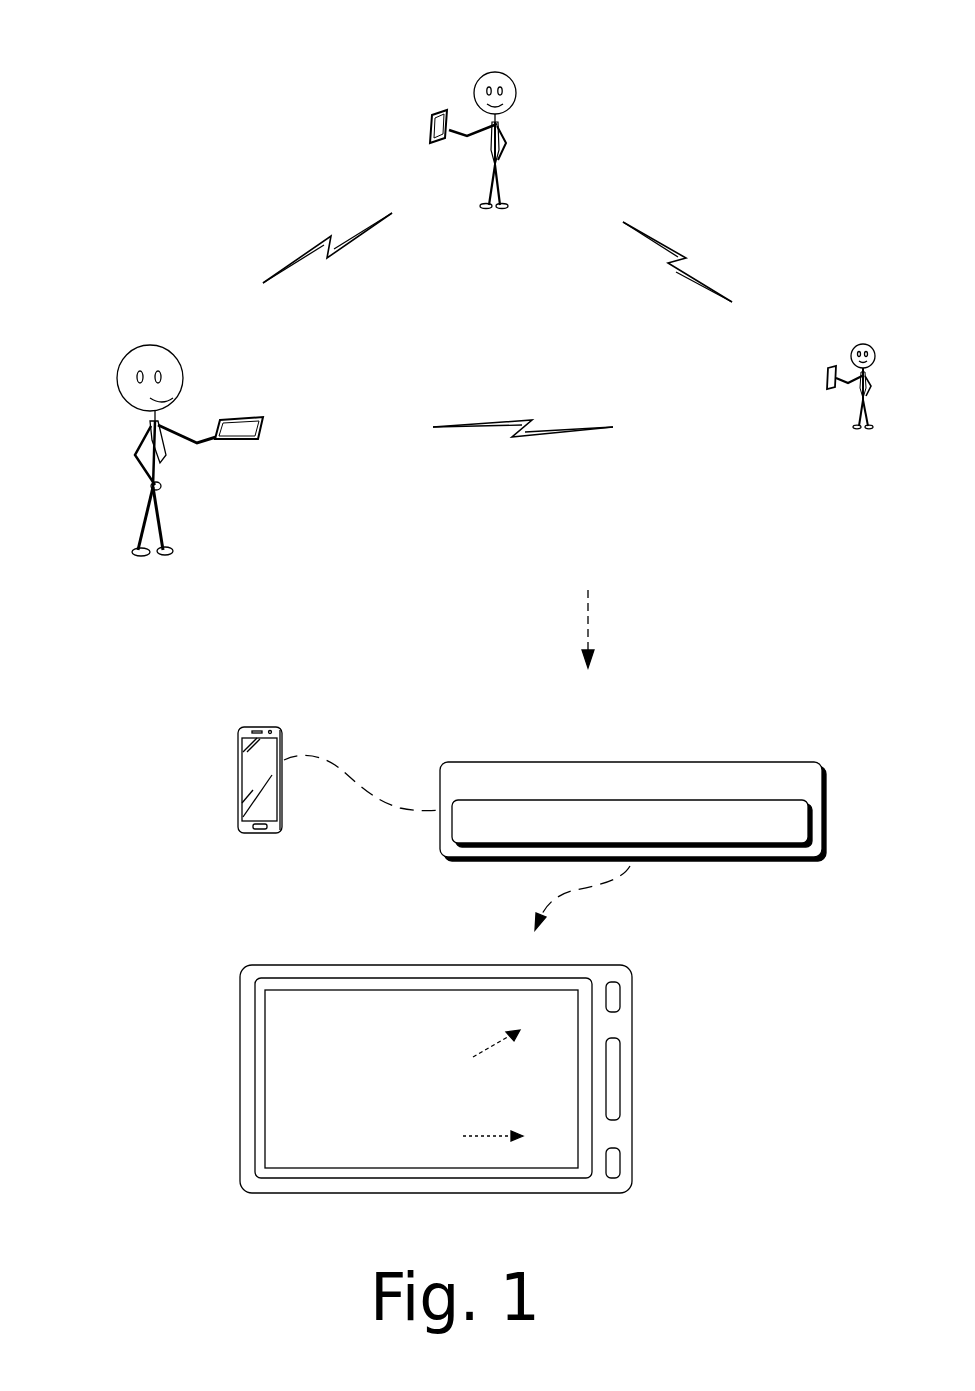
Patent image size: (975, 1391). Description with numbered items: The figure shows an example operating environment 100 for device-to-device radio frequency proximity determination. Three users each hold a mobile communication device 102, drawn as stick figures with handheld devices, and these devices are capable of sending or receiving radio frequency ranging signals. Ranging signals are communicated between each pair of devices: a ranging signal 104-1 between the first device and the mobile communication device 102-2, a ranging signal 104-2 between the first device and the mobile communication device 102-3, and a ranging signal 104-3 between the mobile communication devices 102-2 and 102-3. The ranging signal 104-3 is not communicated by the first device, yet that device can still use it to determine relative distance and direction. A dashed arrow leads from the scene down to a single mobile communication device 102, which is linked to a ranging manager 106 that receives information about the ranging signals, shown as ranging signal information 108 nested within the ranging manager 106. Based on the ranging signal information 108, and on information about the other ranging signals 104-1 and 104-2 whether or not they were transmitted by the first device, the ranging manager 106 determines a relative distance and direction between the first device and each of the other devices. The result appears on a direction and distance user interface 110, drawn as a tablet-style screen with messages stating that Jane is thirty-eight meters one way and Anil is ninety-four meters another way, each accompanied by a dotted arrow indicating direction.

The operating environment 100 is at (122, 52).
The mobile communication device 102 is at (262, 727).
The mobile communication device 102-2 is at (430, 142).
The mobile communication device 102-3 is at (828, 383).
The ranging signal 104-1 is at (346, 252).
The ranging signal 104-2 is at (536, 436).
The ranging signal 104-3 is at (693, 250).
The ranging manager 106 is at (806, 789).
The ranging signal information 108 is at (795, 830).
The direction and distance user interface 110 is at (267, 1145).